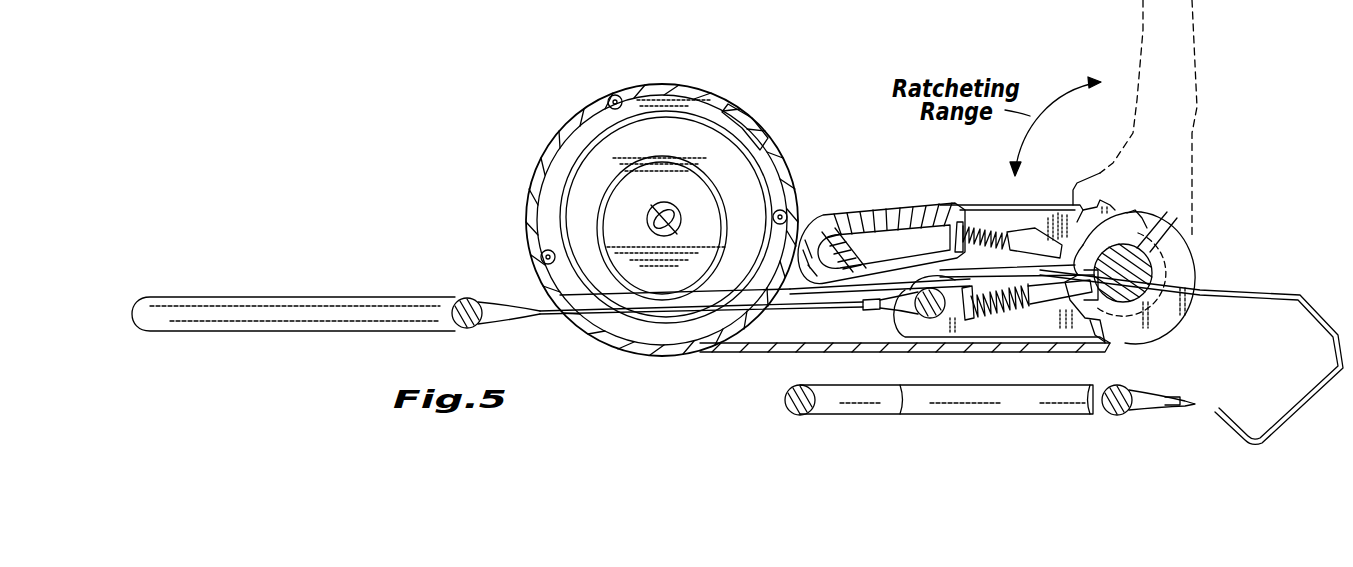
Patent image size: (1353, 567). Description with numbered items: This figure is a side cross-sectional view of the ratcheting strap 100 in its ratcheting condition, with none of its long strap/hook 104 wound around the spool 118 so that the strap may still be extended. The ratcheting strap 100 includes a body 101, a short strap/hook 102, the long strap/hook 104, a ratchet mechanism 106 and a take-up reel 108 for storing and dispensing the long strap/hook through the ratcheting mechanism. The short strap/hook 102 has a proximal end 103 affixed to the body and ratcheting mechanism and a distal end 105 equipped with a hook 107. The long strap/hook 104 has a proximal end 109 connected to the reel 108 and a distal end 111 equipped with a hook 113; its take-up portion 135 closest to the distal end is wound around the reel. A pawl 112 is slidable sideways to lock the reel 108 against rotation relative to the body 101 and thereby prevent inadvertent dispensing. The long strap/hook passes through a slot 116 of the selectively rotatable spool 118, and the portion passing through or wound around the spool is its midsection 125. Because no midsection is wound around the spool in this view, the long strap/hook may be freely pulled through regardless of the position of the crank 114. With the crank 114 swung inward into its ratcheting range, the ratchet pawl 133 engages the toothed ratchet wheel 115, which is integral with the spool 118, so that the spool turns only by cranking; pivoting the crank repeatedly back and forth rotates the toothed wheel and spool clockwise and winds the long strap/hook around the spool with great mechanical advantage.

The ratcheting strap 100 is at (997, 427).
The body 101 is at (788, 173).
The short strap/hook 102 is at (463, 294).
The proximal end 103 is at (897, 355).
The long strap/hook 104 is at (1303, 292).
The distal end 105 is at (498, 325).
The ratchet mechanism 106 is at (1167, 337).
The hook 107 is at (273, 292).
The take-up reel 108 is at (650, 207).
The proximal end 109 is at (673, 200).
The distal end 111 is at (1122, 417).
The pawl 112 is at (760, 118).
The hook 113 is at (887, 416).
The crank 114 is at (893, 210).
The toothed ratchet wheel 115 is at (1138, 214).
The slot 116 is at (1150, 245).
The spool 118 is at (1140, 233).
The midsection 125 is at (1155, 265).
The ratchet pawl 133 is at (1060, 207).
The take-up portion 135 is at (660, 205).